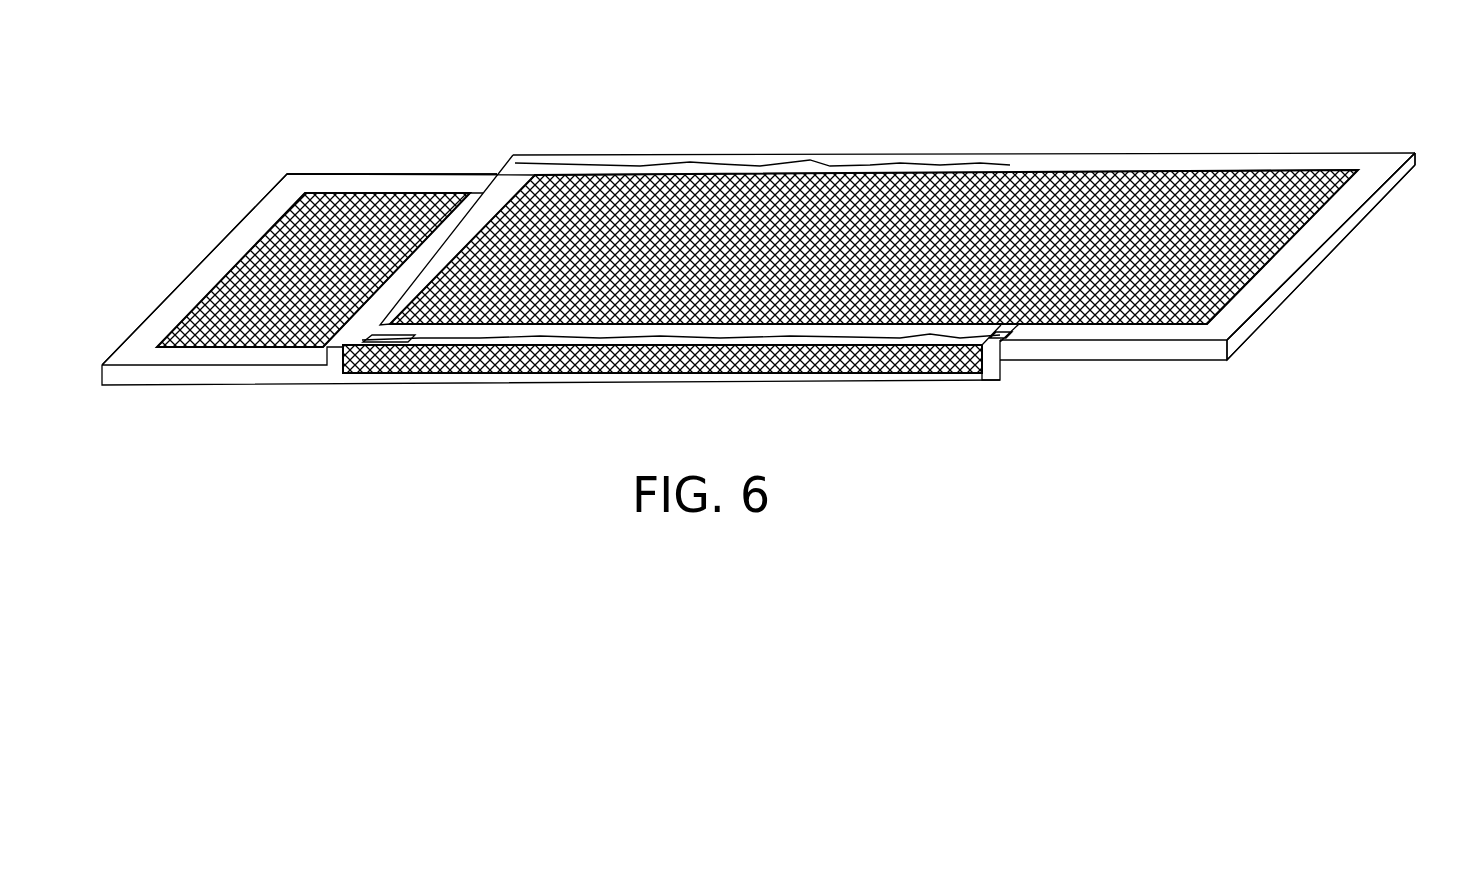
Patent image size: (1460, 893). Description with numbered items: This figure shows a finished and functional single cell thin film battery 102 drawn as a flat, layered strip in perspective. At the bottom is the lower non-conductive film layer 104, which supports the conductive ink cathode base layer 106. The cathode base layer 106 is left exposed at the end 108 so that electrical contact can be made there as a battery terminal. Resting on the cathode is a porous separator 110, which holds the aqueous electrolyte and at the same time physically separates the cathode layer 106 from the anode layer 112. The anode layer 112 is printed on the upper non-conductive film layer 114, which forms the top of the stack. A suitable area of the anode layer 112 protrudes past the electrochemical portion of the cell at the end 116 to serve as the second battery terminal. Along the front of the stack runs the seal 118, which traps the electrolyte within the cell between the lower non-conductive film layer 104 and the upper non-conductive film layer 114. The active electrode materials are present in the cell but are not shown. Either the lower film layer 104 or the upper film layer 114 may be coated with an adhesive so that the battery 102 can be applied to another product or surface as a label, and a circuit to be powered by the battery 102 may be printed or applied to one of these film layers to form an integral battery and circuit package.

The thin film battery 102 is at (1031, 86).
The lower non-conductive film layer 104 is at (268, 387).
The conductive ink cathode base layer 106 is at (243, 297).
The end 108 is at (258, 160).
The porous separator 110 is at (487, 207).
The anode layer 112 is at (1362, 233).
The upper non-conductive film layer 114 is at (1253, 320).
The end 116 is at (1318, 322).
The seal 118 is at (983, 382).